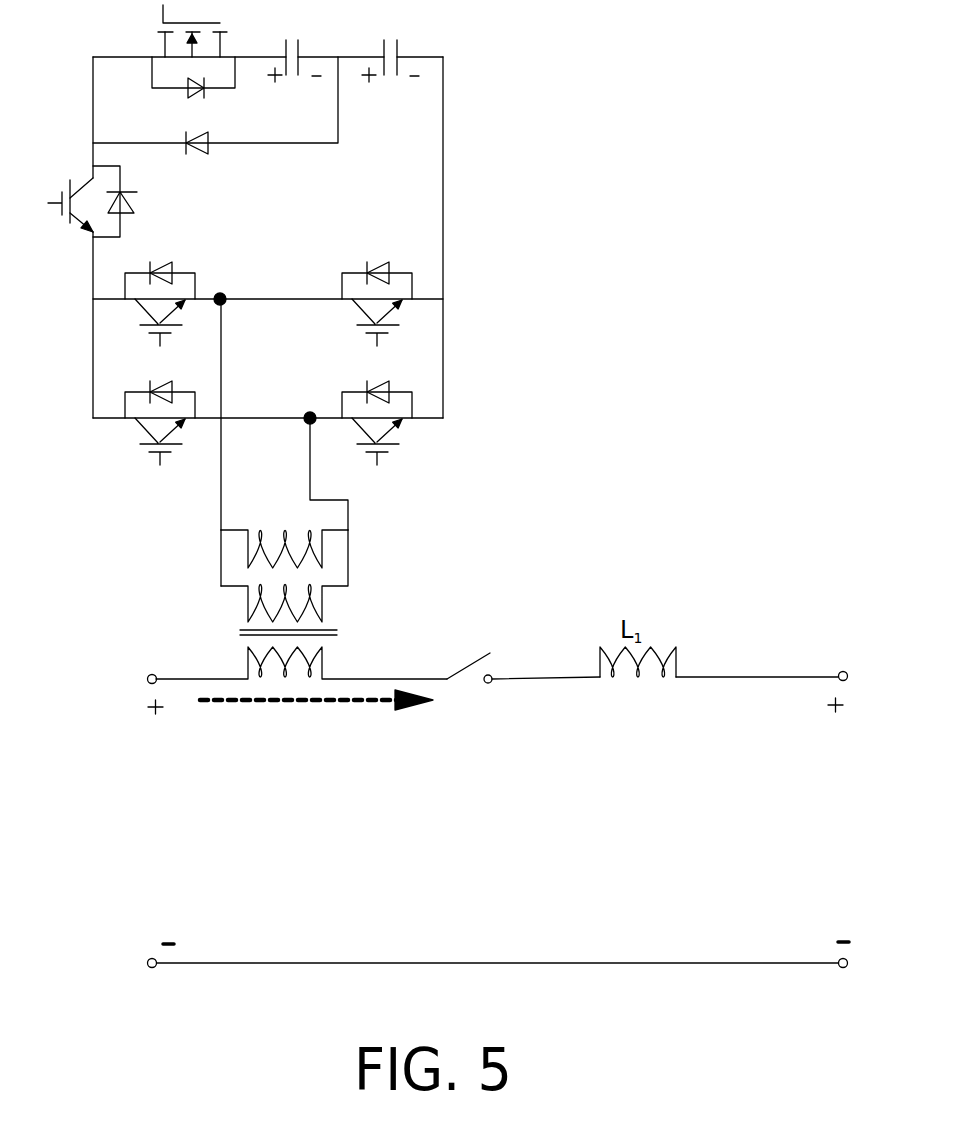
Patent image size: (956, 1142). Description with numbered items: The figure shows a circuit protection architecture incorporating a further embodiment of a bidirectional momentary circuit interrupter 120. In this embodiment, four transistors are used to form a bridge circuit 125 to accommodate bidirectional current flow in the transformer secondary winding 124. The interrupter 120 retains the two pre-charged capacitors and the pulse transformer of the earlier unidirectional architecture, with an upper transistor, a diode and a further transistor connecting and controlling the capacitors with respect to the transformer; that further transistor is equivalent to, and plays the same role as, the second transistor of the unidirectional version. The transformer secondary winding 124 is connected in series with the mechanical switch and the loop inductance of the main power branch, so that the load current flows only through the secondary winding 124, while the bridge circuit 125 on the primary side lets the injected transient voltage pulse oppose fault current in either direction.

The bidirectional momentary circuit interrupter 120 is at (517, 143).
The transformer secondary winding 124 is at (322, 665).
The bridge circuit 125 is at (181, 514).